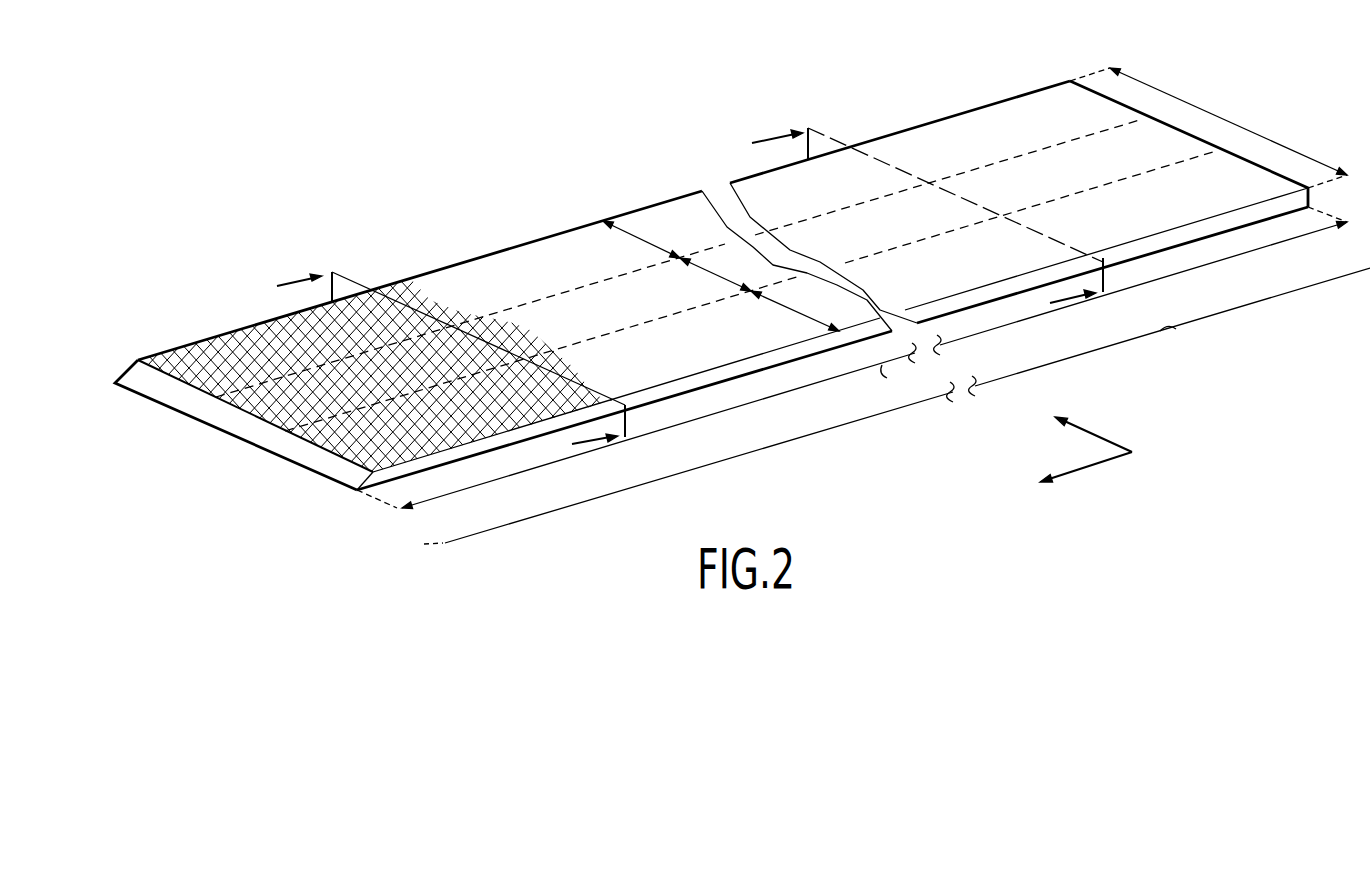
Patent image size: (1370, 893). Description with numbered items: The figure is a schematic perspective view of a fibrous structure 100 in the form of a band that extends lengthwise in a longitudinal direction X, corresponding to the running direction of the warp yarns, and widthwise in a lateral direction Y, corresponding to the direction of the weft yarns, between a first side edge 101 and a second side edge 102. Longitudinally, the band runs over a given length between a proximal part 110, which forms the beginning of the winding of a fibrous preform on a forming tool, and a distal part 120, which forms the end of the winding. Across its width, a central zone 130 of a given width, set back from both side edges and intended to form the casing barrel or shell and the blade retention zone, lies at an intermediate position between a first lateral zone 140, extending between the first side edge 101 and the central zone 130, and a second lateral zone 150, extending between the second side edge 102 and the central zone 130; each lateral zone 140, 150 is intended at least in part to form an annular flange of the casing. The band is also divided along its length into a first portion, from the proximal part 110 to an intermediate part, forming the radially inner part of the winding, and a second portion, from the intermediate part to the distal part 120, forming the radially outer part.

The fibrous structure 100 is at (468, 106).
The first side edge 101 is at (663, 393).
The second side edge 102 is at (433, 270).
The proximal part 110 is at (334, 498).
The distal part 120 is at (1055, 78).
The central zone 130 is at (657, 320).
The first lateral zone 140 is at (714, 355).
The second lateral zone 150 is at (570, 276).